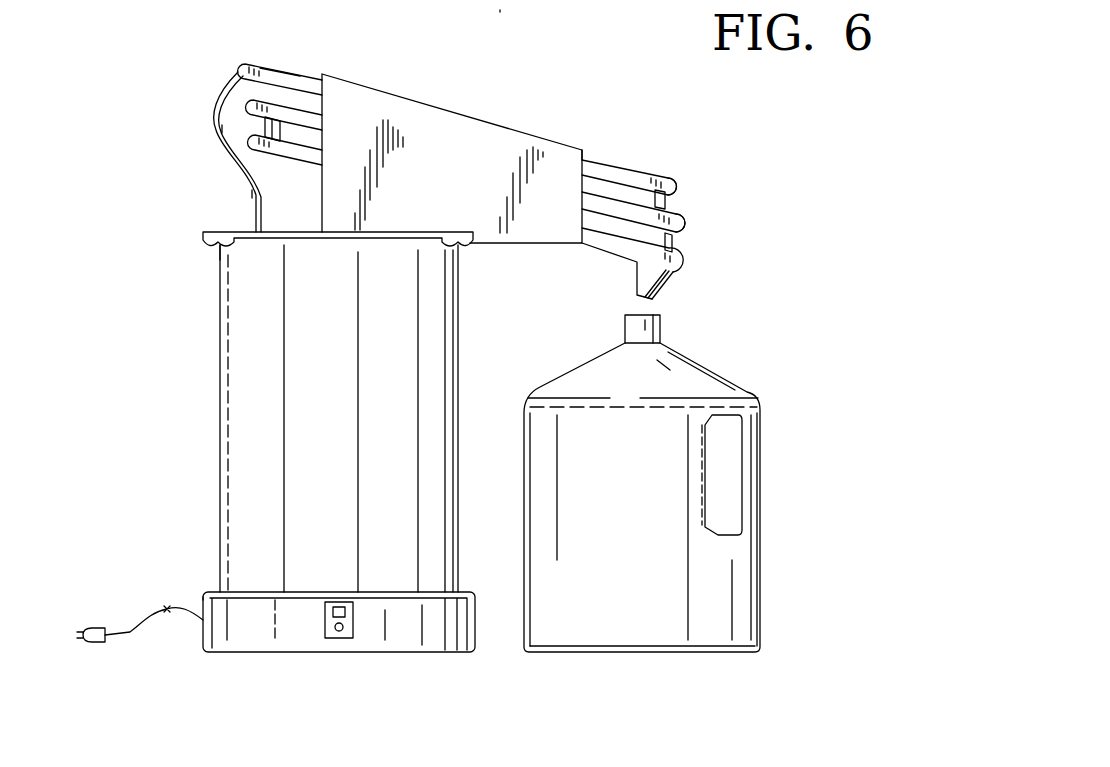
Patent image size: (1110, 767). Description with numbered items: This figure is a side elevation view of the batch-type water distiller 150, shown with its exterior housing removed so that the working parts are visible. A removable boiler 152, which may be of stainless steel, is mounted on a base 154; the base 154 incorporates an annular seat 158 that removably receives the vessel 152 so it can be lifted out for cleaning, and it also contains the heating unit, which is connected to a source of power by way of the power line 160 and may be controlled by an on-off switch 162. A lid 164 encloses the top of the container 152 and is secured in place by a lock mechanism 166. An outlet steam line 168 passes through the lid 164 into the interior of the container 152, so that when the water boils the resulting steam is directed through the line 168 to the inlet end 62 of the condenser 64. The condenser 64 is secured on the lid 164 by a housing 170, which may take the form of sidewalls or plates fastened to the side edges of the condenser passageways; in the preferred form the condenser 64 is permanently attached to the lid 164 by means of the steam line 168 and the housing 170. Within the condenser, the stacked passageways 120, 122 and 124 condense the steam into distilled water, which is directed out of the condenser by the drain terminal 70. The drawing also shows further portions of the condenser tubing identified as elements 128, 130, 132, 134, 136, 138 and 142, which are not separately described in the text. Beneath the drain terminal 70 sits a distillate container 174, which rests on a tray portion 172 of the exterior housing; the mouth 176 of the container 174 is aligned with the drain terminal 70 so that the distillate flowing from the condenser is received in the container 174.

The inlet end 62 is at (263, 65).
The condenser 64 is at (290, 65).
The drain terminal 70 is at (660, 287).
The stacked passageway 120 is at (593, 170).
The stacked passageway 122 is at (600, 200).
The stacked passageway 124 is at (613, 245).
The tube end 128 is at (663, 177).
The connecting link 130 is at (670, 203).
The tube end 132 is at (683, 225).
The tube 134 is at (248, 103).
The connecting link 136 is at (265, 128).
The tube 138 is at (248, 142).
The tube bend 142 is at (673, 245).
The water distiller 150 is at (580, 92).
The boiler 152 is at (240, 363).
The base 154 is at (240, 632).
The annular seat 158 is at (212, 592).
The power line 160 is at (140, 618).
The on-off switch 162 is at (325, 620).
The lid 164 is at (210, 233).
The lock mechanism 166 is at (233, 244).
The outlet steam line 168 is at (247, 197).
The housing 170 is at (422, 115).
The tray portion 172 is at (515, 6).
The distillate container 174 is at (713, 383).
The mouth 176 is at (647, 328).